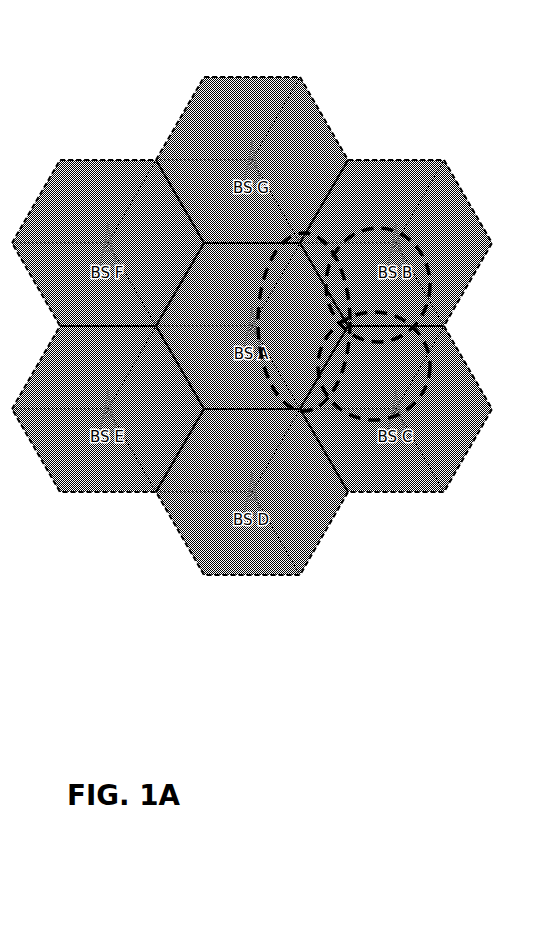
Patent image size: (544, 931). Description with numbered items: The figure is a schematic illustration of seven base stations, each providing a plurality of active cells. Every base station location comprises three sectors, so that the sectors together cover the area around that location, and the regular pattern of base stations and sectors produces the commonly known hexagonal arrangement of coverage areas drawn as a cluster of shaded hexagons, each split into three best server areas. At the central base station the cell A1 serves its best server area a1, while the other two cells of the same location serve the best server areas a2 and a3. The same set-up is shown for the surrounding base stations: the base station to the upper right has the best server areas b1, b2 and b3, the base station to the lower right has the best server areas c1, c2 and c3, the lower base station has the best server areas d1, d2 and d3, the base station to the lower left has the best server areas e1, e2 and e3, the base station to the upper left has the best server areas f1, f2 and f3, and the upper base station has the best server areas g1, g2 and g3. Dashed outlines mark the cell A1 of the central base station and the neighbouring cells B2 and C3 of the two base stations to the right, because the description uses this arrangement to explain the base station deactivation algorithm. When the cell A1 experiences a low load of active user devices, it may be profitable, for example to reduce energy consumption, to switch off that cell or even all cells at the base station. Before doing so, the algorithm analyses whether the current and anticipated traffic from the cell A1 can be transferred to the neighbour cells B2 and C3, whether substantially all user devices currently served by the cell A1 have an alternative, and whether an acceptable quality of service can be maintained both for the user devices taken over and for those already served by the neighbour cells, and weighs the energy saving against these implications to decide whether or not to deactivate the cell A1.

The cell A1 is at (328, 246).
The neighbour cell B2 is at (399, 243).
The neighbour cell C3 is at (387, 425).
The best server area a1 is at (300, 330).
The best server area a2 is at (226, 375).
The best server area a3 is at (230, 287).
The best server area b1 is at (446, 248).
The best server area b2 is at (372, 293).
The best server area b3 is at (374, 209).
The best server area c1 is at (445, 412).
The best server area c2 is at (373, 458).
The best server area c3 is at (377, 373).
The best server area d1 is at (301, 495).
The best server area d2 is at (222, 548).
The best server area d3 is at (229, 452).
The best server area e1 is at (160, 412).
The best server area e2 is at (85, 455).
The best server area e3 is at (85, 368).
The best server area f1 is at (158, 248).
The best server area f2 is at (86, 293).
The best server area f3 is at (84, 203).
The best server area g1 is at (295, 163).
The best server area g2 is at (228, 215).
The best server area g3 is at (231, 125).